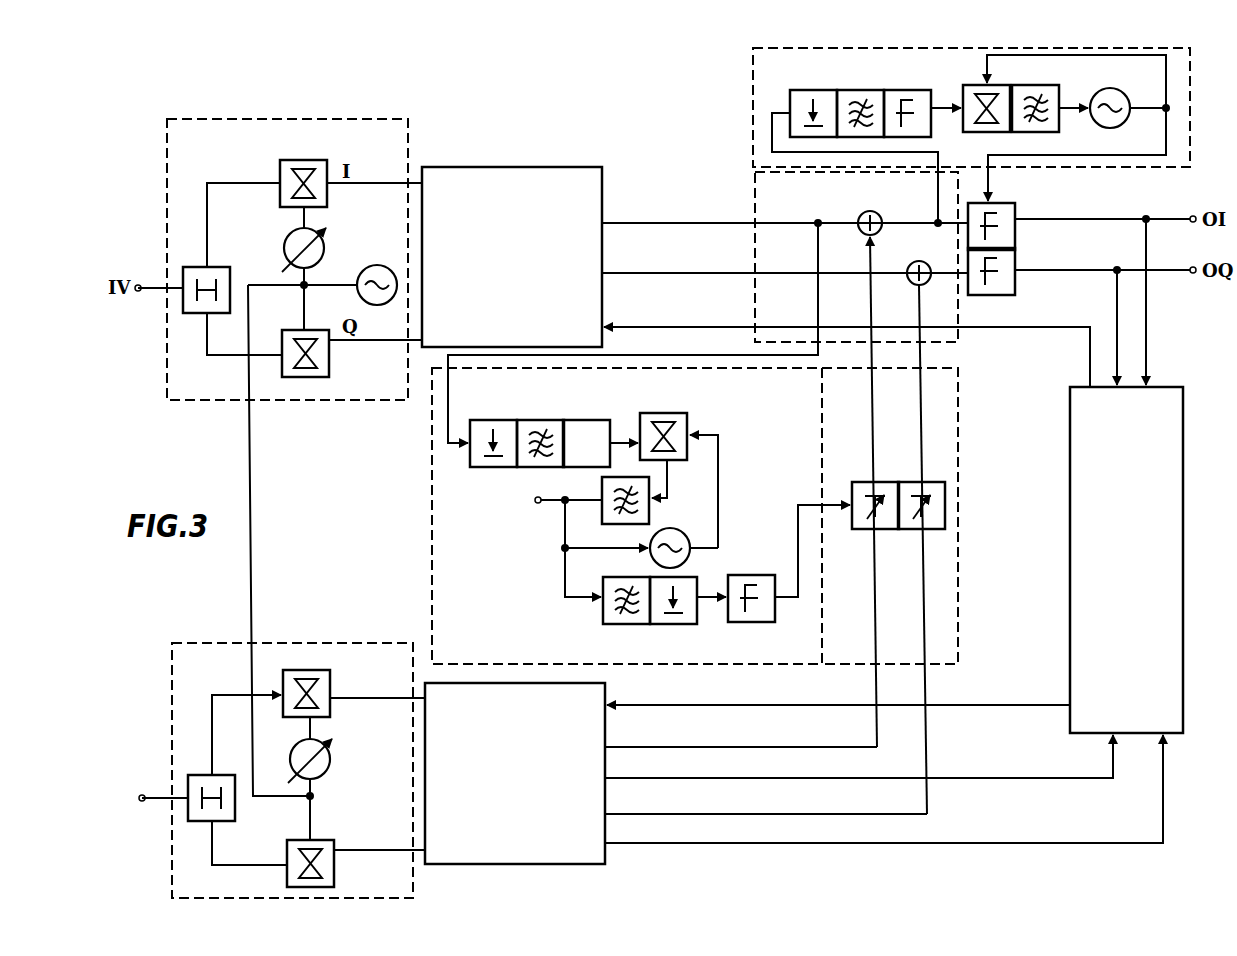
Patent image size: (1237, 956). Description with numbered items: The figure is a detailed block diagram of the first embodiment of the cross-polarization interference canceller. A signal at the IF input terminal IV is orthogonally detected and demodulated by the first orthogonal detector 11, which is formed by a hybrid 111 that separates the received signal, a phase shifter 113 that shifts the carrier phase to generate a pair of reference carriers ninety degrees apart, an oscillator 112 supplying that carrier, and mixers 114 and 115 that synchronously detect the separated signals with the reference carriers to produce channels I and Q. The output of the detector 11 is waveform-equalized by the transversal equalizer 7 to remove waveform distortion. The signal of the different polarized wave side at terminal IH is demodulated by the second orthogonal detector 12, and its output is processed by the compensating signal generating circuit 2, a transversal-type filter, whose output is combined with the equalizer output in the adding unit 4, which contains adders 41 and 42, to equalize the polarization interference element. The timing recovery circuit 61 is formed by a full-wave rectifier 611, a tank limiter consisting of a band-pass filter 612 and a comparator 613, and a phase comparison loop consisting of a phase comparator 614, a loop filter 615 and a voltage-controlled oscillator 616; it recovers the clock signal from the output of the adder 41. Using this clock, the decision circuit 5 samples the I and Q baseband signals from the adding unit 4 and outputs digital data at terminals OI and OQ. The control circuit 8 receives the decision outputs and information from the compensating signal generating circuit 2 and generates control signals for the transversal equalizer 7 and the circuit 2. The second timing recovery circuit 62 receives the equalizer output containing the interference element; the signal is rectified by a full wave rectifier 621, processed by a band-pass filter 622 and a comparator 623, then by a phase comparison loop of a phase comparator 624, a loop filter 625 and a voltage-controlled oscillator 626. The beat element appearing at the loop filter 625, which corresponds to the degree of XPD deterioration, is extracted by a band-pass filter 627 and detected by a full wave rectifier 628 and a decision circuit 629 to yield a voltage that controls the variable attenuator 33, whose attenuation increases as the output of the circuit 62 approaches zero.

The compensating signal generating circuit 2 is at (605, 868).
The adding unit 4 is at (752, 204).
The decision circuit 5 is at (1010, 203).
The transversal equalizer 7 is at (505, 167).
The control circuit 8 is at (1160, 387).
The first orthogonal detector 11 is at (338, 118).
The second orthogonal detector 12 is at (338, 643).
The variable attenuator 33 is at (958, 452).
The adder 41 is at (882, 212).
The adder 42 is at (929, 262).
The timing recovery circuit 61 is at (1192, 104).
The timing recovery circuit 62 is at (428, 522).
The hybrid 111 is at (195, 313).
The oscillator 112 is at (392, 265).
The phase shifter 113 is at (285, 236).
The mixer 114 is at (288, 160).
The mixer 115 is at (302, 376).
The full-wave rectifier 611 is at (792, 90).
The band-pass filter 612 is at (842, 90).
The comparator 613 is at (887, 90).
The phase comparator 614 is at (968, 131).
The loop filter 615 is at (1040, 85).
The voltage-controlled oscillator 616 is at (1108, 88).
The full wave rectifier 621 is at (478, 420).
The band-pass filter 622 is at (528, 420).
The comparator 623 is at (575, 420).
The phase comparator 624 is at (660, 413).
The loop filter 625 is at (652, 512).
The voltage-controlled oscillator 626 is at (690, 538).
The band-pass filter 627 is at (610, 622).
The full wave rectifier 628 is at (660, 622).
The decision circuit 629 is at (752, 620).